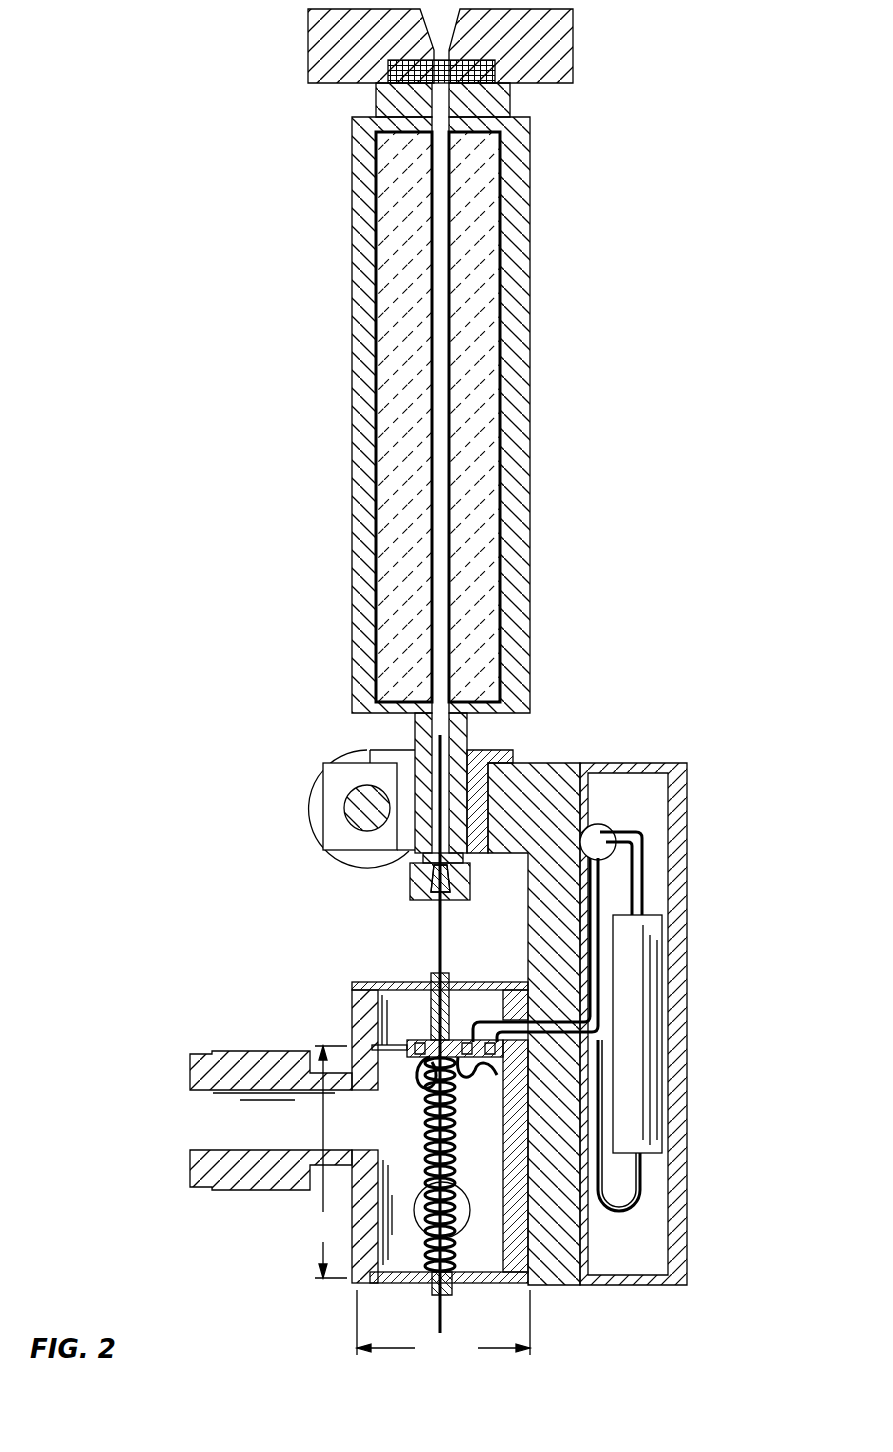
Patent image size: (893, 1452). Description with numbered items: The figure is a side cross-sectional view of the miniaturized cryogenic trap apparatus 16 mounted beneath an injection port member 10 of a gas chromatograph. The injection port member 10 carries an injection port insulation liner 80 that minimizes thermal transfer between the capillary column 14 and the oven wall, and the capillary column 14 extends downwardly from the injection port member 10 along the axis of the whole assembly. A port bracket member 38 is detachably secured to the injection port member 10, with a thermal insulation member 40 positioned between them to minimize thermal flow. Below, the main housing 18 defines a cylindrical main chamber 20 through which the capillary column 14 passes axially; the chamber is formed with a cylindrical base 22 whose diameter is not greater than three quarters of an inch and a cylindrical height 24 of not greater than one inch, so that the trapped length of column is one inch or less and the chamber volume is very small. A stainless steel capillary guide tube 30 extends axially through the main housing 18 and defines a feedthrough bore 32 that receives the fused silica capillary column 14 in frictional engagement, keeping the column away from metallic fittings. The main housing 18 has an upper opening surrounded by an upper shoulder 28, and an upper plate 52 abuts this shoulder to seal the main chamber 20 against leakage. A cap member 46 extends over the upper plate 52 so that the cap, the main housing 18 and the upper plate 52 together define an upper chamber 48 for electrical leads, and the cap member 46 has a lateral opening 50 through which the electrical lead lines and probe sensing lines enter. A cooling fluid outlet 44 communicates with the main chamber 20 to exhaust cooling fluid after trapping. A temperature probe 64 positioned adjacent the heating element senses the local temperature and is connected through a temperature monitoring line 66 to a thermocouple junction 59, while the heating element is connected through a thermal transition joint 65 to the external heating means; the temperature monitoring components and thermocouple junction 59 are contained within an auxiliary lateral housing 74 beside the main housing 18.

The injection port member 10 is at (530, 310).
The injection port insulation liner 80 is at (478, 215).
The thermal insulation member 40 is at (487, 747).
The miniaturized cryogenic trap apparatus 16 is at (581, 763).
The lateral opening 50 is at (548, 1043).
The main housing 18 is at (553, 1288).
The auxiliary lateral housing 74 is at (678, 780).
The thermal transition joint 65 is at (600, 832).
The thermocouple junction 59 is at (637, 1034).
The temperature monitoring line 66 is at (640, 1180).
The cap member 46 is at (355, 1005).
The upper shoulder 28 is at (353, 1045).
The upper chamber 48 is at (440, 1017).
The main chamber 20 is at (440, 1164).
The feedthrough bore 32 is at (445, 973).
The capillary guide tube 30 is at (450, 1035).
The upper plate 52 is at (388, 1052).
The temperature probe 64 is at (415, 1085).
The cooling fluid outlet 44 is at (458, 1207).
The capillary column 14 is at (439, 920).
The port bracket member 38 is at (335, 780).
The cylindrical height 24 is at (312, 1232).
The cylindrical base 22 is at (415, 1356).